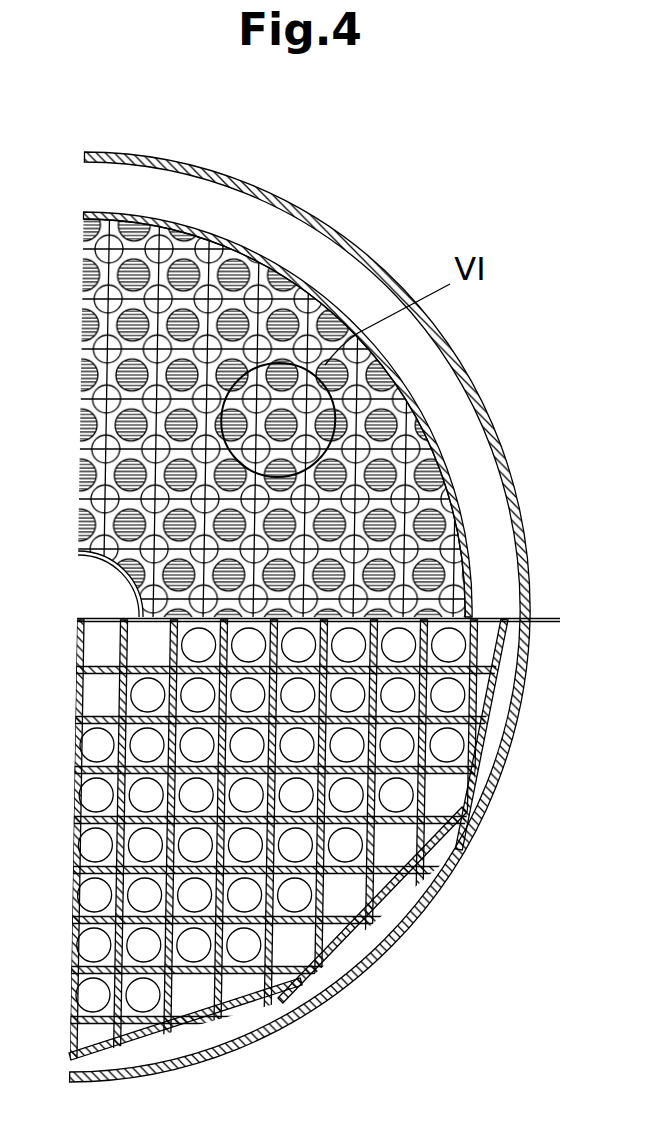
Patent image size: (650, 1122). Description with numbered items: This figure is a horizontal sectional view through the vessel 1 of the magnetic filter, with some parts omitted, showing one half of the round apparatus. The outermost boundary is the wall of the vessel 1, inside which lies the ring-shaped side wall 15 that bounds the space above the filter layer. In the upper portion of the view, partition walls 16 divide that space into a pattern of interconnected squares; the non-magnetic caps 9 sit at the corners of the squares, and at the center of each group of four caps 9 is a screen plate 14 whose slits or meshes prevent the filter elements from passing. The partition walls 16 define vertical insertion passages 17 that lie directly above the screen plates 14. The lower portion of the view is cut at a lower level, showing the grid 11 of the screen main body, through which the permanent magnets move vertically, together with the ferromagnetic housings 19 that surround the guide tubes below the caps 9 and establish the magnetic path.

The vessel 1 is at (532, 608).
The cap 9 is at (215, 300).
The grid 11 is at (440, 855).
The screen plate 14 is at (328, 322).
The ring-shaped side wall 15 is at (194, 220).
The partition wall 16 is at (92, 395).
The vertical insertion passage 17 is at (430, 405).
The housing 19 is at (97, 740).